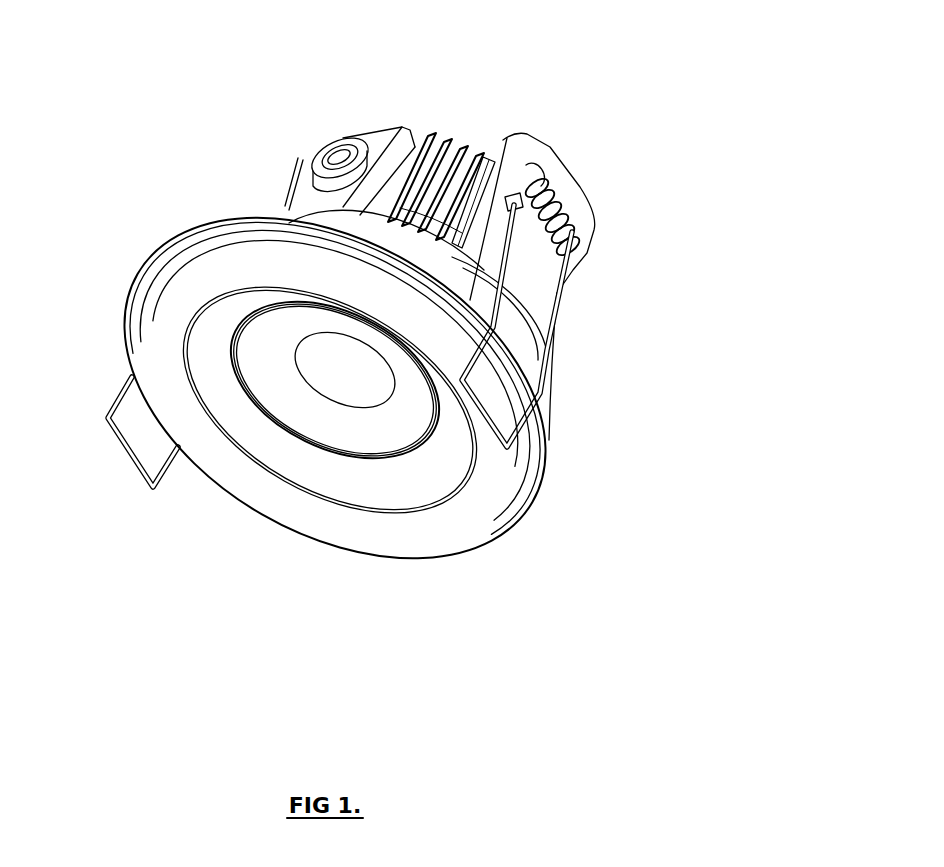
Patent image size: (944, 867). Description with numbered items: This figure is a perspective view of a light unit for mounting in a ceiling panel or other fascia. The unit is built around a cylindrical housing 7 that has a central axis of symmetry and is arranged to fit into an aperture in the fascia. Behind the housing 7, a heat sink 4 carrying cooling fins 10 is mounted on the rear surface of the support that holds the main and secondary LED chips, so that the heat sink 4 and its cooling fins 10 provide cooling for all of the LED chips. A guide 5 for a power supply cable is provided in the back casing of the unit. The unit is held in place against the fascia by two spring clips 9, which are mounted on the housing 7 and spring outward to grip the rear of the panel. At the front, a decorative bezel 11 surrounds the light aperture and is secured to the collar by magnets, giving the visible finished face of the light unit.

The heat sink 4 is at (477, 150).
The guide 5 is at (345, 134).
The housing 7 is at (320, 218).
The spring clips 9 is at (555, 355).
The cooling fins 10 is at (428, 137).
The decorative bezel 11 is at (470, 522).